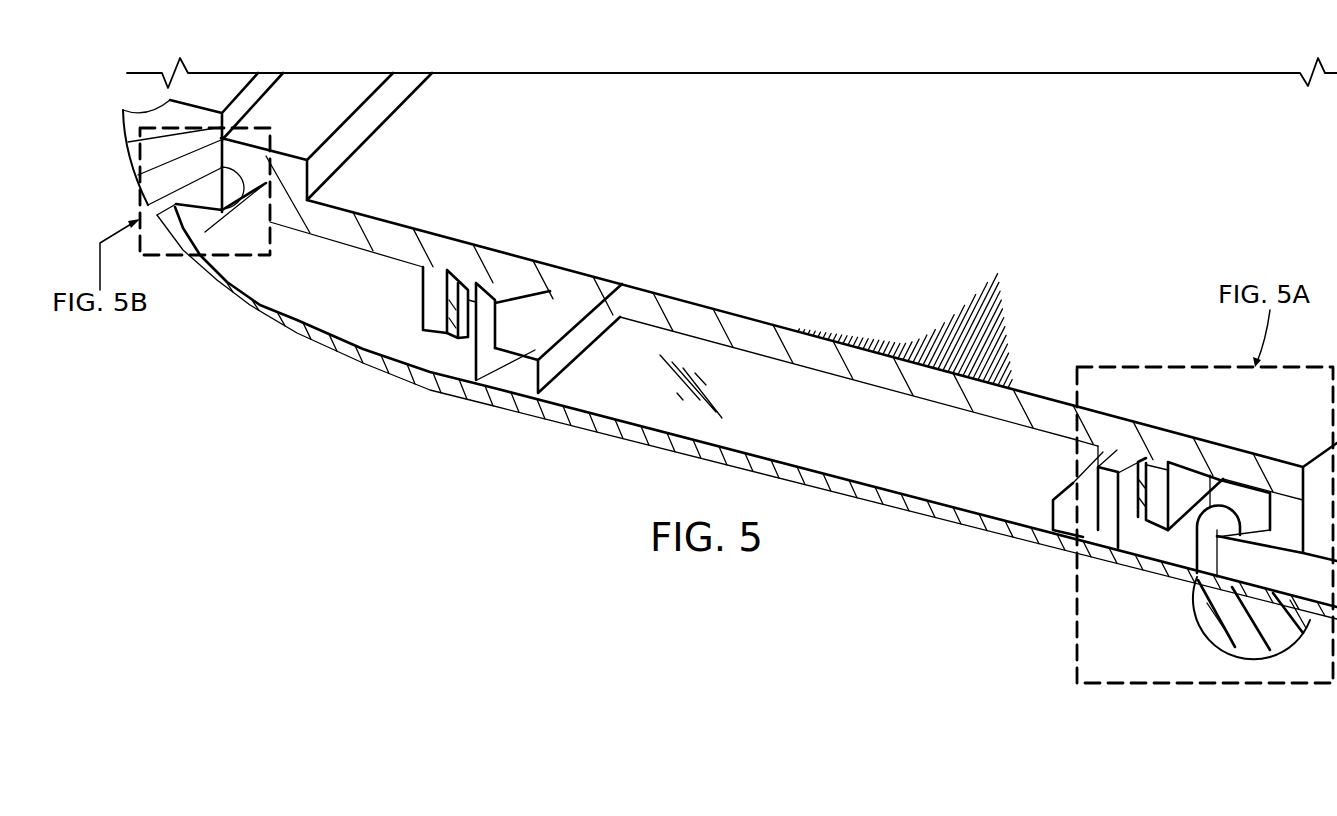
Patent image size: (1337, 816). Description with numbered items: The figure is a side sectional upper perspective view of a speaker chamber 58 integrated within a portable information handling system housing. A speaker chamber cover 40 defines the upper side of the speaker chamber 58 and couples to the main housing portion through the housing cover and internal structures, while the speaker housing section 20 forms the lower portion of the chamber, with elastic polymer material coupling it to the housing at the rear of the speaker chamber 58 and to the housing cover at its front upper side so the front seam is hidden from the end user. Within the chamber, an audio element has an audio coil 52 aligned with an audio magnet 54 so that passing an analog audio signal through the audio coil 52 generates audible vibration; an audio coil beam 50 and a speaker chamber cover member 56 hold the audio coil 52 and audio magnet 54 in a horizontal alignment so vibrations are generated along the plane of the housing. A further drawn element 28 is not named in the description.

The speaker housing section 20 is at (549, 420).
The arched retaining clip 28 is at (1243, 497).
The speaker chamber cover 40 is at (884, 230).
The audio coil beam 50 is at (573, 352).
The audio coil 52 is at (481, 268).
The audio magnet 54 is at (449, 312).
The speaker chamber cover member 56 is at (422, 283).
The speaker chamber 58 is at (966, 476).